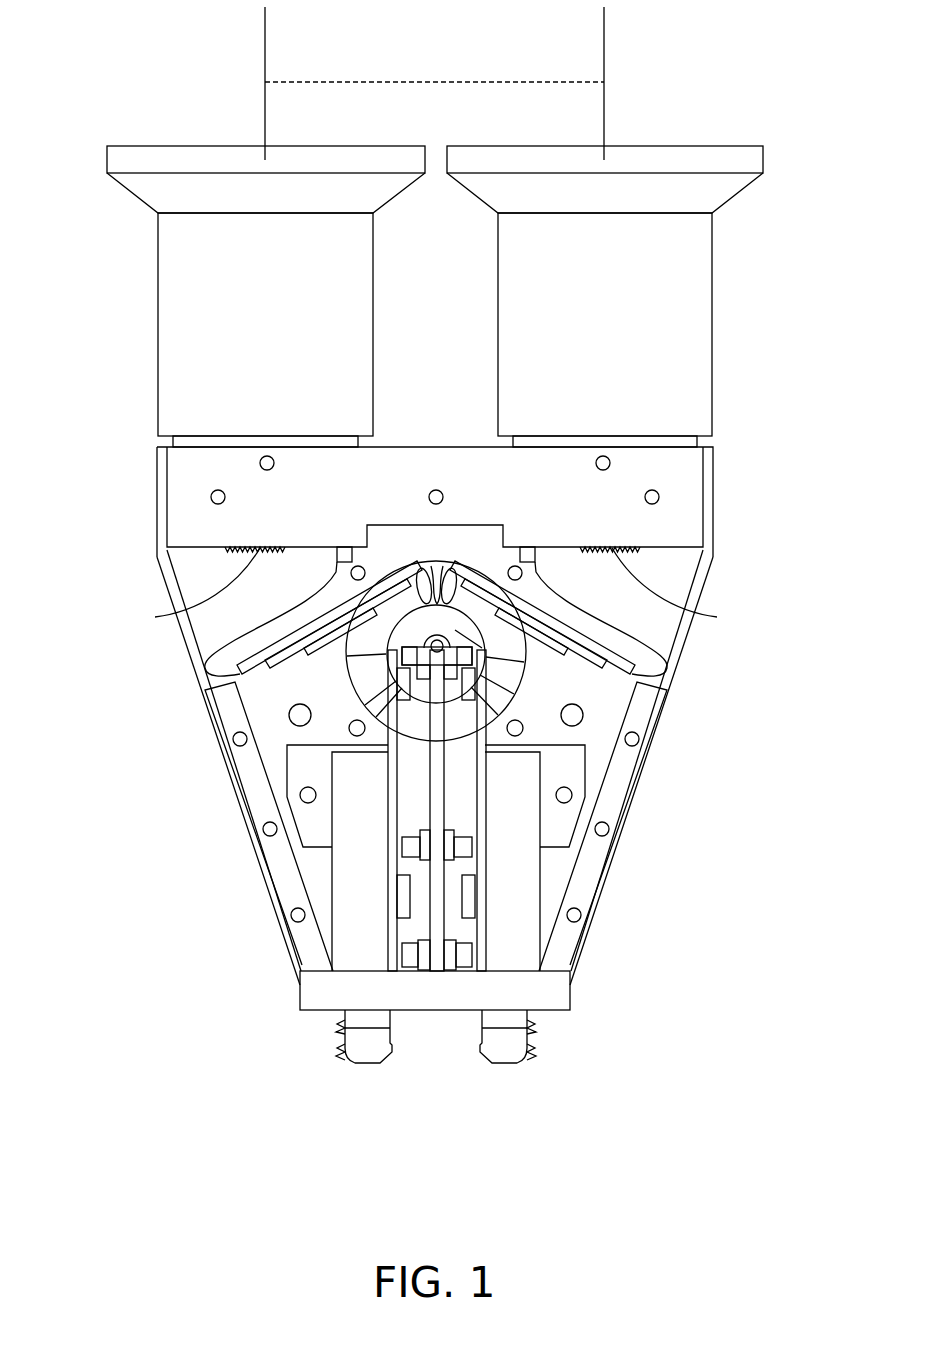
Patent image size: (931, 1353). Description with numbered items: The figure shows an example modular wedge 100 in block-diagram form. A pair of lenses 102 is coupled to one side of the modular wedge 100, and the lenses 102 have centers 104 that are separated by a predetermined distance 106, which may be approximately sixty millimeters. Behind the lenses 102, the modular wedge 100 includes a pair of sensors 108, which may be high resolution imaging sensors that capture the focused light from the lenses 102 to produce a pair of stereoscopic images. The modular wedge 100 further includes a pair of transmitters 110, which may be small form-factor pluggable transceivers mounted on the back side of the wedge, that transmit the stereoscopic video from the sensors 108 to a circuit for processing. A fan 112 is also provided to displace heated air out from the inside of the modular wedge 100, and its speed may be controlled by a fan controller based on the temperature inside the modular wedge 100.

The modular wedge 100 is at (456, 1247).
The lenses 102 is at (158, 312).
The centers 104 is at (264, 108).
The predetermined distance 106 is at (400, 82).
The sensors 108 is at (157, 617).
The transmitters 110 is at (363, 1065).
The fan 112 is at (524, 655).